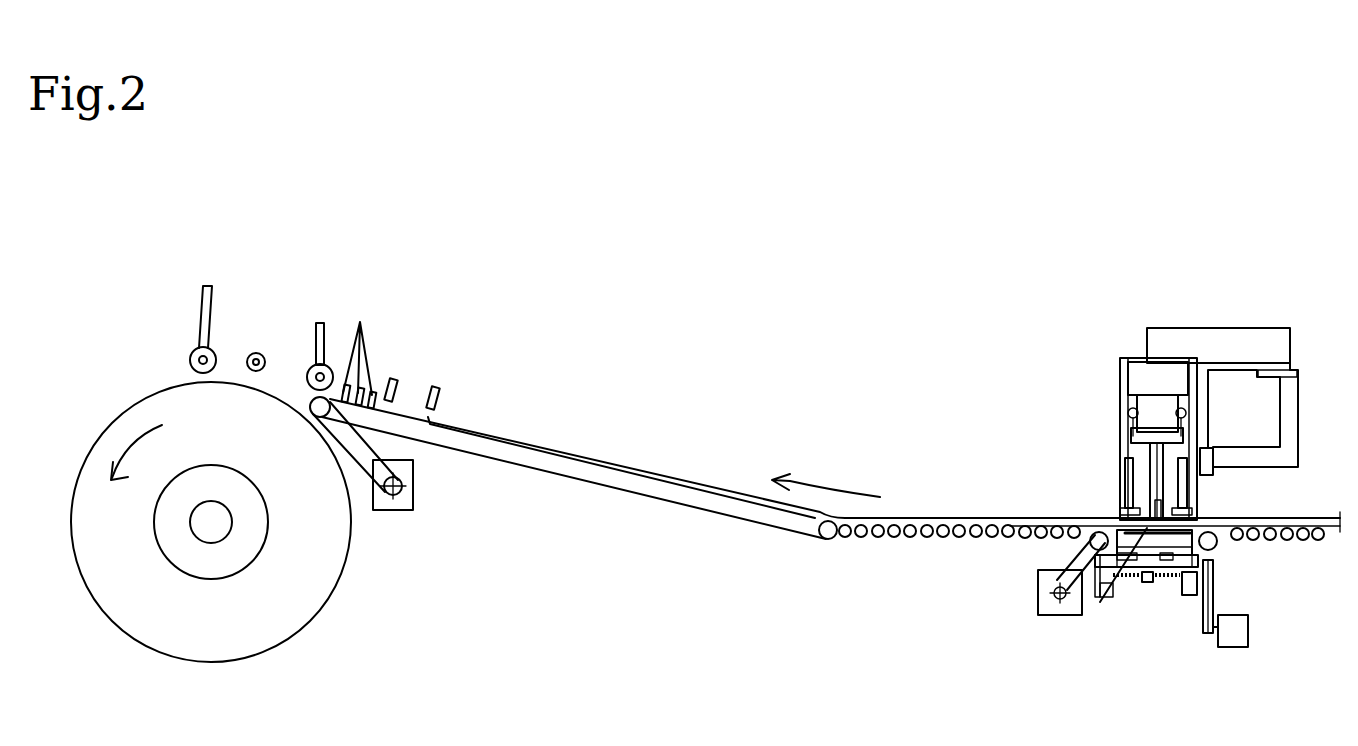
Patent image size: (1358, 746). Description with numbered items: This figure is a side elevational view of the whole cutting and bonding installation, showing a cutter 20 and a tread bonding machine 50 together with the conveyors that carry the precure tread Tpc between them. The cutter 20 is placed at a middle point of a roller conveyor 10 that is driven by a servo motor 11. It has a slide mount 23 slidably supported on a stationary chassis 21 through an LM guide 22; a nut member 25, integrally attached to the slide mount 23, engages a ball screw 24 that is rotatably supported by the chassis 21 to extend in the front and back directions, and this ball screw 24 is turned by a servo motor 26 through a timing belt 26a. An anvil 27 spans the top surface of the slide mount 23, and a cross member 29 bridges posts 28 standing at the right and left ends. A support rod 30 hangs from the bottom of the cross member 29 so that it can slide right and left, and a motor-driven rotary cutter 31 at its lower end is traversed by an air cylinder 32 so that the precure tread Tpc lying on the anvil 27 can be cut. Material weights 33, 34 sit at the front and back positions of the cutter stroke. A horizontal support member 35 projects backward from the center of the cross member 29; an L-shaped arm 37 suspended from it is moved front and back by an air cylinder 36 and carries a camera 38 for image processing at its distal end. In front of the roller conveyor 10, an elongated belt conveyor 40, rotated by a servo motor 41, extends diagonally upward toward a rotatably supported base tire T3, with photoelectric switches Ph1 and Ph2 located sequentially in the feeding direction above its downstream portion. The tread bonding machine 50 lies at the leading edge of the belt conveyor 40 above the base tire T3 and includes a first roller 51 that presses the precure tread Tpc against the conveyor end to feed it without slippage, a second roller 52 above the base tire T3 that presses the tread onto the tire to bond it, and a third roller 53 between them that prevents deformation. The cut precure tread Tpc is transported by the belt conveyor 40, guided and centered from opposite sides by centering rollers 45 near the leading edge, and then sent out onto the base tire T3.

The base tire T3 is at (103, 432).
The tread bonding machine 50 is at (312, 196).
The first roller 51 is at (312, 366).
The second roller 52 is at (206, 347).
The third roller 53 is at (257, 352).
The centering rollers 45 is at (360, 322).
The photoelectric switch Ph2 is at (394, 378).
The photoelectric switch Ph1 is at (437, 386).
The belt conveyor 40 is at (626, 493).
The servo motor 41 is at (413, 497).
The precure tread Tpc is at (912, 517).
The roller conveyor 10 is at (963, 556).
The servo motor 11 is at (1038, 610).
The cutter 20 is at (1169, 292).
The stationary chassis 21 is at (1125, 580).
The LM guide 22 is at (1195, 557).
The slide mount 23 is at (1183, 540).
The ball screw 24 is at (1168, 582).
The nut member 25 is at (1147, 586).
The servo motor 26 is at (1250, 633).
The timing belt 26a is at (1213, 600).
The anvil 27 is at (1108, 577).
The posts 28 is at (1120, 423).
The cross member 29 is at (1134, 366).
The support rod 30 is at (1157, 453).
The rotary cutter 31 is at (1163, 506).
The air cylinder 32 is at (1150, 408).
The material weight 33 is at (1165, 513).
The material weight 34 is at (1118, 508).
The horizontal support member 35 is at (1228, 330).
The air cylinder 36 is at (1293, 364).
The L-shaped arm 37 is at (1298, 434).
The camera 38 is at (1205, 448).